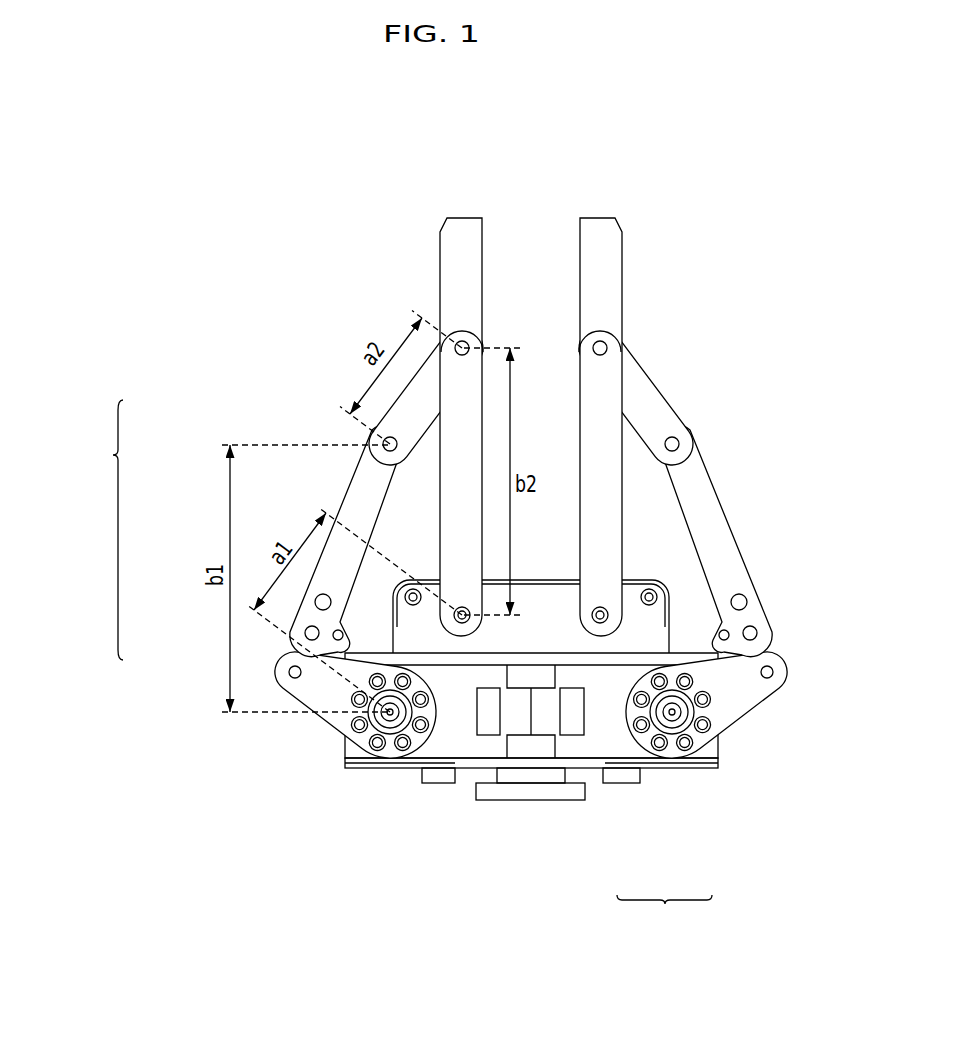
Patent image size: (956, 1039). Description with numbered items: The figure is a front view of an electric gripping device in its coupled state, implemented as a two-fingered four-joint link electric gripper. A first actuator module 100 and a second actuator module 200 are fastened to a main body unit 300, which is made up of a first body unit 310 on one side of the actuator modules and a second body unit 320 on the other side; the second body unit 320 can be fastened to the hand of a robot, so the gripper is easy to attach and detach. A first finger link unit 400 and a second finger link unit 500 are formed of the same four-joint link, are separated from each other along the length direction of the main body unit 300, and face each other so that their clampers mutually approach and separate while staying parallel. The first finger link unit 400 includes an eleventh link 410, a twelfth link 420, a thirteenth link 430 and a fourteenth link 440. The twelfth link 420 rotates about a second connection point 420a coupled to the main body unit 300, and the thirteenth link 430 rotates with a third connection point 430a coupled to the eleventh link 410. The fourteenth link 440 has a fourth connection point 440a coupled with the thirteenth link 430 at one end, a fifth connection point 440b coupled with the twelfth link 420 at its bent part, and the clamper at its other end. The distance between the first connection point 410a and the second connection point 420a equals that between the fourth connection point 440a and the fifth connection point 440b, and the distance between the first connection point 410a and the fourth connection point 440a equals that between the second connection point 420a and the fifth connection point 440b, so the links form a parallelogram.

The first actuator module 100 is at (449, 737).
The second actuator module 200 is at (583, 742).
The main body unit 300 is at (664, 911).
The first body unit 310 is at (613, 657).
The second body unit 320 is at (685, 760).
The first finger link unit 400 is at (100, 530).
The eleventh link 410 is at (283, 669).
The first connection point 410a is at (388, 715).
The twelfth link 420 is at (460, 528).
The second connection point 420a is at (460, 607).
The thirteenth link 430 is at (338, 560).
The third connection point 430a is at (312, 641).
The fourteenth link 440 is at (418, 397).
The fourth connection point 440a is at (388, 448).
The fifth connection point 440b is at (462, 341).
The second finger link unit 500 is at (727, 508).